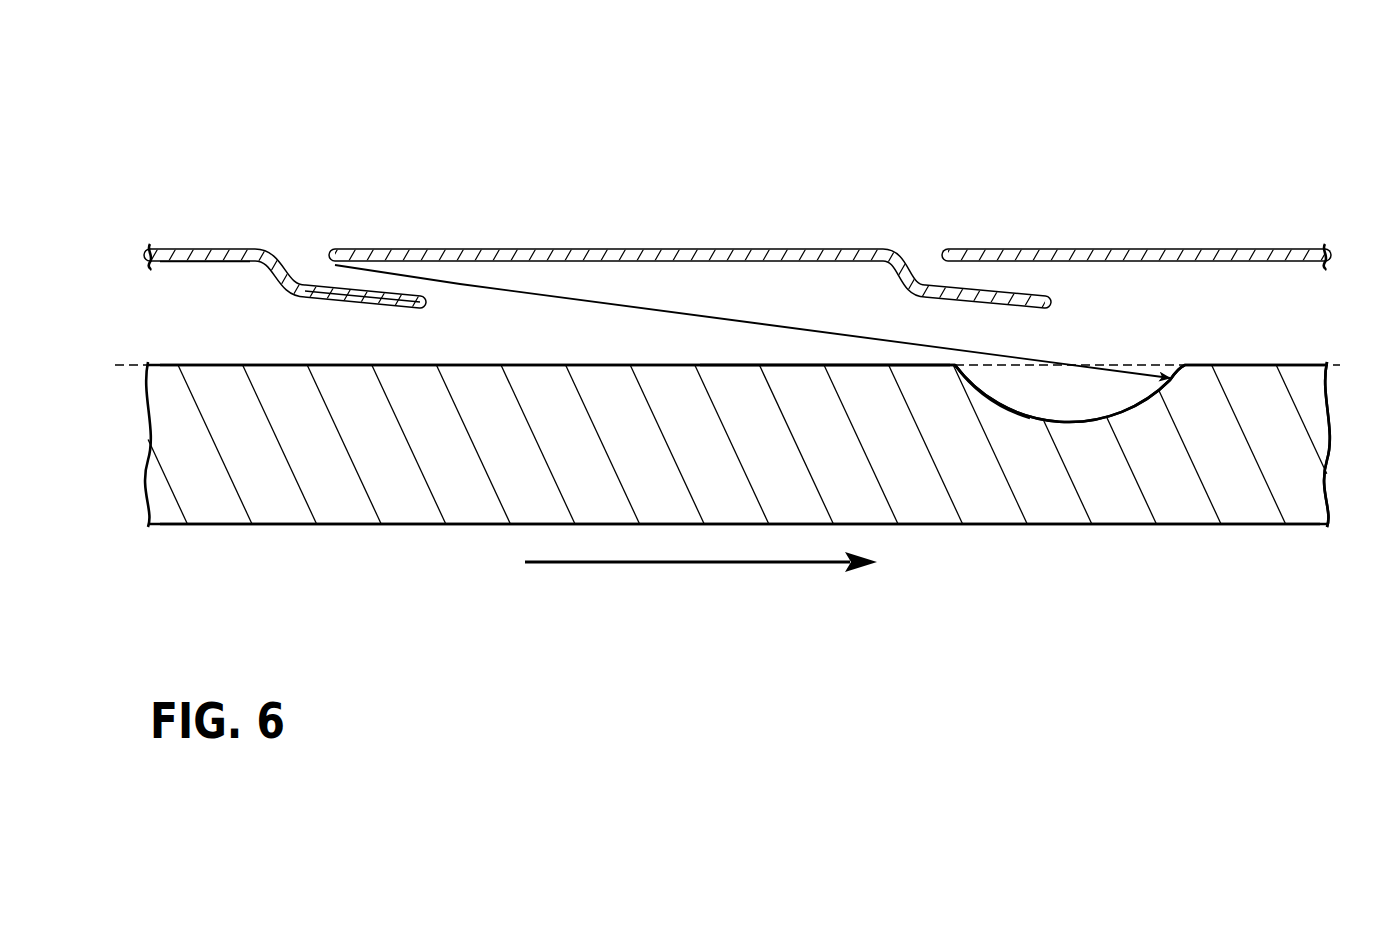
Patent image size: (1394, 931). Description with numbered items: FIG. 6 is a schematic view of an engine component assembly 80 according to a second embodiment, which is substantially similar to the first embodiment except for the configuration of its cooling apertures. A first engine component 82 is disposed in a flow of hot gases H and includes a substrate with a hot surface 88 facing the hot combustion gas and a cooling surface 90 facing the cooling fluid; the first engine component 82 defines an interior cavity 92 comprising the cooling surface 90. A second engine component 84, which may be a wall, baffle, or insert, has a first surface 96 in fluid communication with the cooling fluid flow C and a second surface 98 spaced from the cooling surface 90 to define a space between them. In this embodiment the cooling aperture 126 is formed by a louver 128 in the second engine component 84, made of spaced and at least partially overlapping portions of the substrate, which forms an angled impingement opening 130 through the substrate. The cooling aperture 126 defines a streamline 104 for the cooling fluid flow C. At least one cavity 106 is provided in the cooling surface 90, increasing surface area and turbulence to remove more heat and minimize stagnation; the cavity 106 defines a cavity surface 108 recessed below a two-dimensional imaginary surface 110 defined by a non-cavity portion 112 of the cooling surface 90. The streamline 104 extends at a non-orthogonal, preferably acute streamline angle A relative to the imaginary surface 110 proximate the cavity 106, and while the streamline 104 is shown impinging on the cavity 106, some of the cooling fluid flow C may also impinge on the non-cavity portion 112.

The engine component assembly 80 is at (180, 109).
The first engine component 82 is at (1247, 528).
The second engine component 84 is at (1241, 246).
The hot surface 88 is at (210, 526).
The cooling surface 90 is at (197, 365).
The interior cavity 92 is at (590, 248).
The first surface 96 is at (187, 248).
The second surface 98 is at (187, 262).
The streamline 104 is at (587, 301).
The cavity 106 is at (1034, 426).
The cavity surface 108 is at (996, 402).
The imaginary surface 110 is at (1348, 365).
The non-cavity portion 112 is at (733, 365).
The cooling aperture 126 is at (323, 237).
The louver 128 is at (371, 298).
The angled impingement opening 130 is at (318, 275).
The streamline angle A is at (812, 362).
The cooling fluid flow C is at (335, 267).
The hot gases H is at (701, 577).